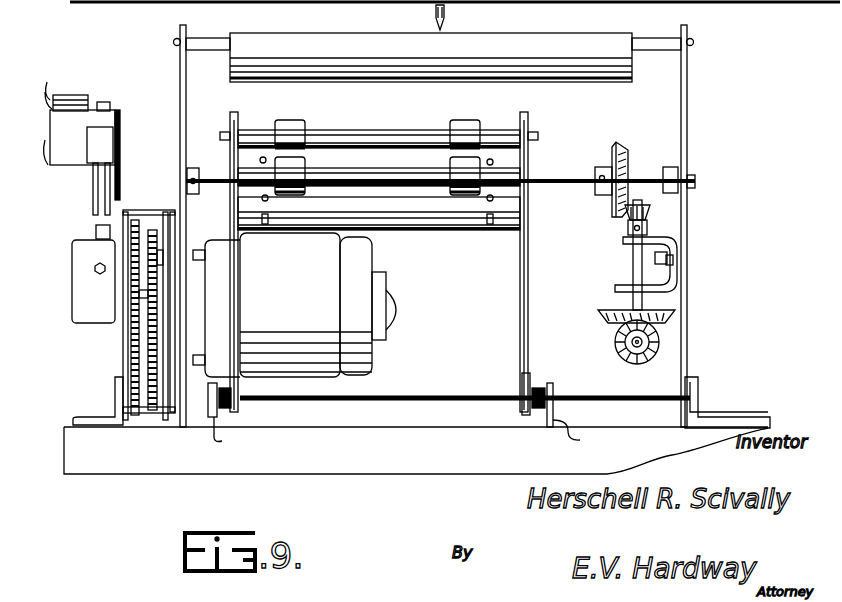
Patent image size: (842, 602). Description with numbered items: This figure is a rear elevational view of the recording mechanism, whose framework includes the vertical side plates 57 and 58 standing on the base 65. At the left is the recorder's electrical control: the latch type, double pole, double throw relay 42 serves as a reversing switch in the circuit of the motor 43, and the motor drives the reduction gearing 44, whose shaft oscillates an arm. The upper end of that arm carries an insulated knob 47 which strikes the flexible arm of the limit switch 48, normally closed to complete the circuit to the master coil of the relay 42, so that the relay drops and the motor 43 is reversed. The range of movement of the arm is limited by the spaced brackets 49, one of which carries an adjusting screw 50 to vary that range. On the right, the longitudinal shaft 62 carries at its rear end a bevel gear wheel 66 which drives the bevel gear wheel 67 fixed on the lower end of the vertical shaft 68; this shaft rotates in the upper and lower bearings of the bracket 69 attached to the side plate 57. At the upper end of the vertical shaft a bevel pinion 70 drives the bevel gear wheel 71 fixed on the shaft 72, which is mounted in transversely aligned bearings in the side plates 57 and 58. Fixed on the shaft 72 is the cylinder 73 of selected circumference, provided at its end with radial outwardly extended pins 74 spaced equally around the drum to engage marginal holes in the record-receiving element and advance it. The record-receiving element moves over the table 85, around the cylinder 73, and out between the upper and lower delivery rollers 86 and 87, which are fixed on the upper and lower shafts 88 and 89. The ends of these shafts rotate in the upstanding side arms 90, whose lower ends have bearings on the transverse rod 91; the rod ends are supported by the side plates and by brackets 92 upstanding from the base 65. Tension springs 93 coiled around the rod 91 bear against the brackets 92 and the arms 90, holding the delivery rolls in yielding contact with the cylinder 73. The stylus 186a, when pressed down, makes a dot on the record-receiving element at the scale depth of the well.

The stylus 186a is at (447, 16).
The table 85 is at (232, 61).
The relay 42 is at (90, 127).
The vertical side plate 58 is at (180, 141).
The vertical side plate 57 is at (688, 136).
The radial outwardly extended pins 74 is at (263, 129).
The upstanding side arms 90 is at (230, 214).
The upper delivery roller 86 is at (297, 121).
The lower delivery roller 87 is at (300, 172).
The upper shaft 88 is at (405, 132).
The lower shaft 89 is at (400, 172).
The cylinder 73 is at (423, 232).
The shaft 72 is at (571, 177).
The bevel gear wheel 71 is at (630, 150).
The bevel pinion 70 is at (648, 216).
The vertical shaft 68 is at (632, 263).
The bracket 69 is at (668, 275).
The bevel gear wheel 67 is at (602, 316).
The bevel gear wheel 66 is at (660, 343).
The longitudinal shaft 62 is at (616, 342).
The transverse rod 91 is at (645, 396).
The tension springs 93 is at (241, 410).
The brackets 92 is at (413, 436).
The base 65 is at (752, 418).
The reduction gearing 44 is at (128, 335).
The spaced brackets 49 is at (78, 297).
The adjusting screw 50 is at (95, 269).
The knob 47 is at (100, 226).
The limit switch 48 is at (93, 186).
The motor 43 is at (372, 356).